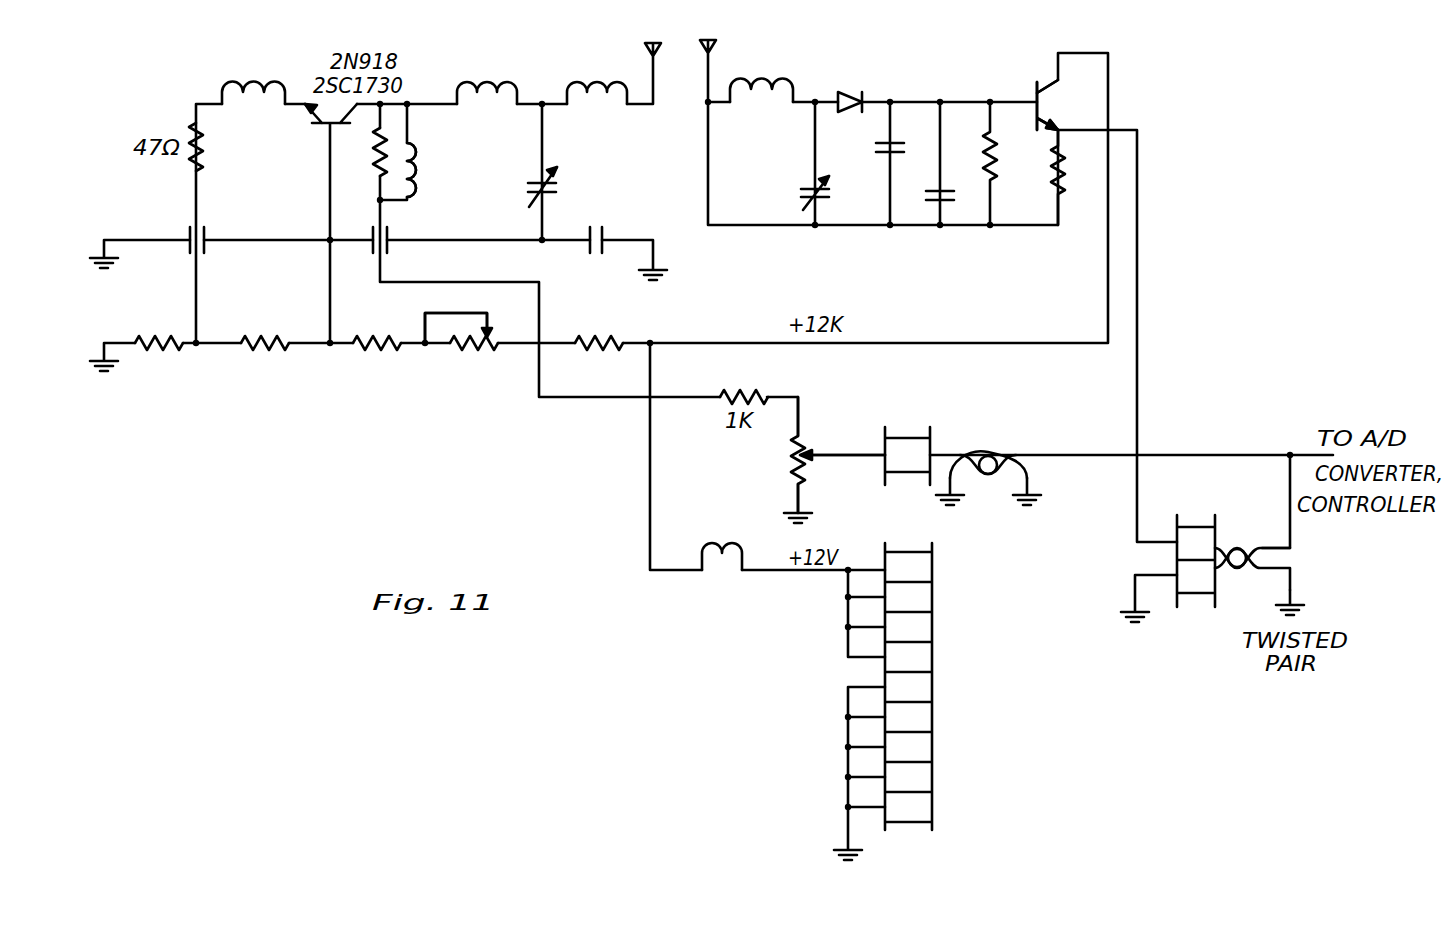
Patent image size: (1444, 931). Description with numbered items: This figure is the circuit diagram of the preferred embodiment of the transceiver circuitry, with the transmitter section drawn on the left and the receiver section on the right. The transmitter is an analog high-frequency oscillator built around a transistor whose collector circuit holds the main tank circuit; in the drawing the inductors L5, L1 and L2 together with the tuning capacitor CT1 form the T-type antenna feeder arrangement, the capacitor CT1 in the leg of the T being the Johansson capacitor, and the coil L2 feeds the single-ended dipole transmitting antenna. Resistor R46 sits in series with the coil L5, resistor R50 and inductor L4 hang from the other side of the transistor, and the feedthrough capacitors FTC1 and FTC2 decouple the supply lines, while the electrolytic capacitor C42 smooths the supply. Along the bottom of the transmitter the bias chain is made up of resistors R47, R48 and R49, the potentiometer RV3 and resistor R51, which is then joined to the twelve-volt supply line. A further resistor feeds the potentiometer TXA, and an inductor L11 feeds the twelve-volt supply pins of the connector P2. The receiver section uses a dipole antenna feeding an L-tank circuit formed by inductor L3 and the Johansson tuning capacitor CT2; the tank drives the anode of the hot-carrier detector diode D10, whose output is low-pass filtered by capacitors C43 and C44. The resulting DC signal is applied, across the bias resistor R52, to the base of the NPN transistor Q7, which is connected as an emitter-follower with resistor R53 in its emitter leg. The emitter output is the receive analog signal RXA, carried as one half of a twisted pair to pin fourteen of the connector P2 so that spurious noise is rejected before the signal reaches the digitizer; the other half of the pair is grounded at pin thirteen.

The inductor L5 is at (253, 77).
The resistor 47 ohm R46 is at (222, 147).
The resistor 1K R50 is at (363, 160).
The inductor L4 is at (441, 170).
The inductor L1 is at (487, 77).
The inductor L2 is at (597, 77).
The trimmer capacitor CT1 is at (567, 181).
The feedthrough capacitor 1000pF FTC1 is at (246, 244).
The feedthrough capacitor 1000pF FTC2 is at (429, 243).
The electrolytic capacitor 47uF/16V C42 is at (590, 241).
The inductor L3 is at (761, 76).
The diode MBD501 D10 is at (865, 99).
The trimmer capacitor CT2 is at (792, 163).
The capacitor .001 C43 is at (873, 163).
The capacitor .01 C44 is at (925, 163).
The resistor 10K R52 is at (972, 163).
The resistor 3.3K R53 is at (1032, 177).
The transistor 2SC373 Q7 is at (1018, 83).
The resistor 220 ohm R47 is at (161, 347).
The resistor 820 ohm R48 is at (267, 347).
The resistor 2.7K R49 is at (375, 347).
The variable resistor 5K RV3 is at (467, 335).
The resistor 100 R51 is at (600, 343).
The inductor L11 is at (722, 544).
The transmit audio level potentiometer 20K TXA is at (802, 451).
The connector P2 is at (1050, 621).
The receive analog signal RXA is at (1183, 554).